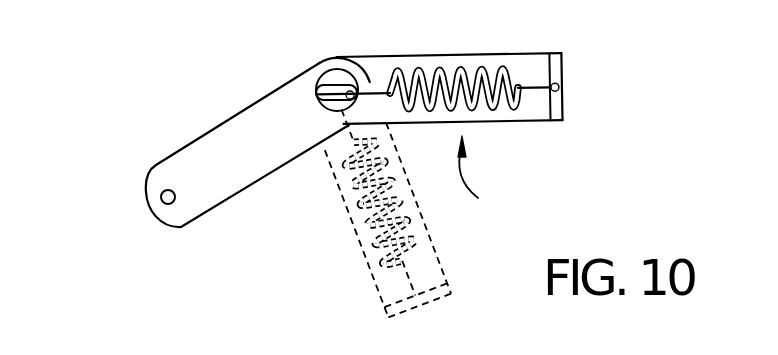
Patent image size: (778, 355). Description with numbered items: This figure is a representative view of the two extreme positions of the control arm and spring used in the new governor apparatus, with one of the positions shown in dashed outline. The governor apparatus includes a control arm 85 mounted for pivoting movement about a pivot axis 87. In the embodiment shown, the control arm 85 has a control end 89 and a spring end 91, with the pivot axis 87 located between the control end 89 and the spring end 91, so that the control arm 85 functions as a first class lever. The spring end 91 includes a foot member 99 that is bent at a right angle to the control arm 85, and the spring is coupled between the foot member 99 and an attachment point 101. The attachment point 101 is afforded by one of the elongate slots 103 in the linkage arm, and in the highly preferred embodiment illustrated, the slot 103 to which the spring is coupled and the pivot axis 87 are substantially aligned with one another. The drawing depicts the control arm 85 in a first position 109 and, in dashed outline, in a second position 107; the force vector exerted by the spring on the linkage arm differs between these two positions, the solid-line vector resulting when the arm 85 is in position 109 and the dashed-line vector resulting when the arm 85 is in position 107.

The control arm 85 is at (241, 112).
The pivot axis 87 is at (337, 104).
The control end 89 is at (150, 179).
The spring end 91 is at (562, 62).
The foot member 99 is at (556, 123).
The attachment point 101 is at (358, 80).
The elongate slot 103 is at (318, 80).
The position of the arm 107 is at (356, 301).
The position of the arm 109 is at (495, 177).